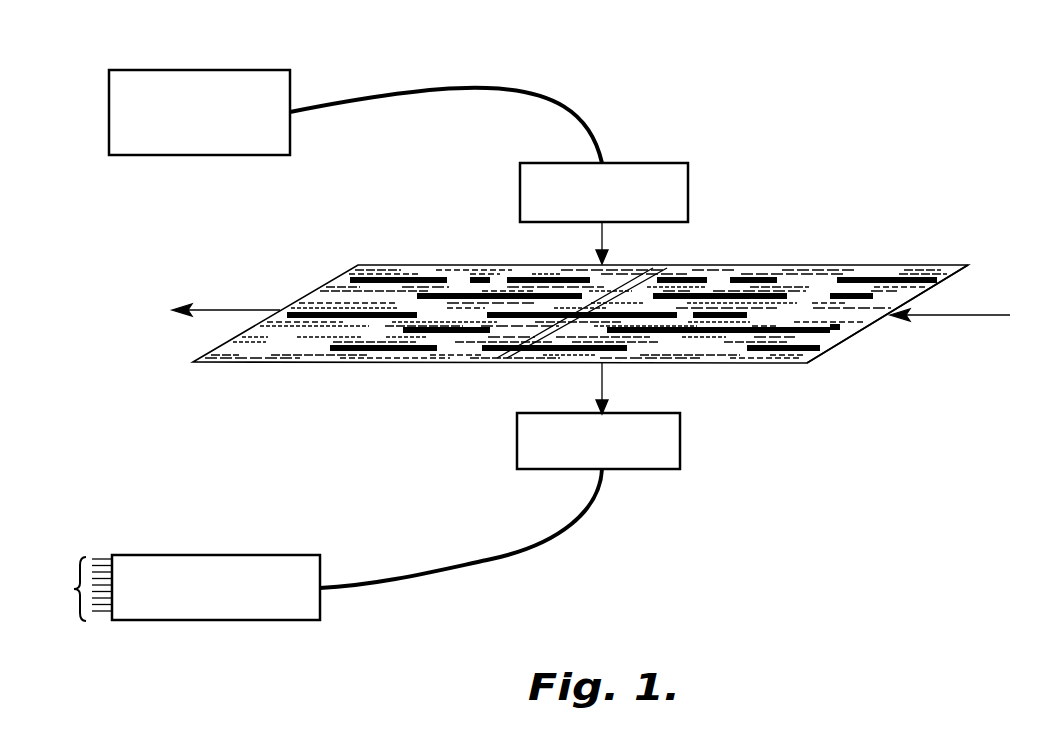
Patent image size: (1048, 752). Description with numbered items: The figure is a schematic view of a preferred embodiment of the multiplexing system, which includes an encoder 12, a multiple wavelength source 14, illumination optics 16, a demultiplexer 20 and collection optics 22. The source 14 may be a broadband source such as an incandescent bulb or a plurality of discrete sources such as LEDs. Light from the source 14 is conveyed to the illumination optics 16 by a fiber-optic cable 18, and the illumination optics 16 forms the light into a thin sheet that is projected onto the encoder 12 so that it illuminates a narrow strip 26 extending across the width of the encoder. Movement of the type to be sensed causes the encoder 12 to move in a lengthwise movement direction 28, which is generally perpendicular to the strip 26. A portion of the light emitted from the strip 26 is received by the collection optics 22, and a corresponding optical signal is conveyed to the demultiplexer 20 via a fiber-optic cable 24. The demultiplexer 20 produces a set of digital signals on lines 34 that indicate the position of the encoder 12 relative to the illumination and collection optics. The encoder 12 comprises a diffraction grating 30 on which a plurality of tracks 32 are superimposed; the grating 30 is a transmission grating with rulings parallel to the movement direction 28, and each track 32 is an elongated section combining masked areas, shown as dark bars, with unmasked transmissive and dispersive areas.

The encoder 12 is at (813, 265).
The multiple wavelength source 14 is at (198, 68).
The illumination optics 16 is at (623, 163).
The fiber-optic cable 18 is at (480, 85).
The demultiplexer 20 is at (283, 553).
The collection optics 22 is at (682, 457).
The fiber-optic cable 24 is at (480, 560).
The strip 26 is at (653, 268).
The movement direction 28 is at (232, 310).
The diffraction grating 30 is at (945, 268).
The tracks 32 is at (832, 324).
The lines 34 is at (73, 589).